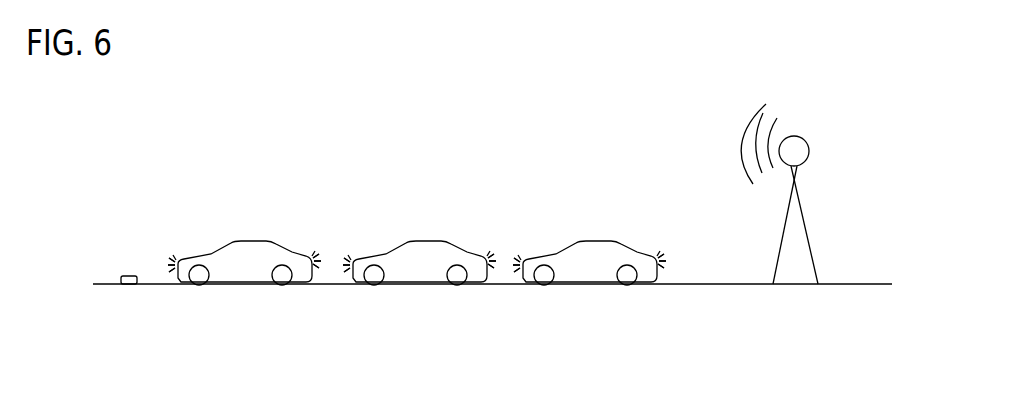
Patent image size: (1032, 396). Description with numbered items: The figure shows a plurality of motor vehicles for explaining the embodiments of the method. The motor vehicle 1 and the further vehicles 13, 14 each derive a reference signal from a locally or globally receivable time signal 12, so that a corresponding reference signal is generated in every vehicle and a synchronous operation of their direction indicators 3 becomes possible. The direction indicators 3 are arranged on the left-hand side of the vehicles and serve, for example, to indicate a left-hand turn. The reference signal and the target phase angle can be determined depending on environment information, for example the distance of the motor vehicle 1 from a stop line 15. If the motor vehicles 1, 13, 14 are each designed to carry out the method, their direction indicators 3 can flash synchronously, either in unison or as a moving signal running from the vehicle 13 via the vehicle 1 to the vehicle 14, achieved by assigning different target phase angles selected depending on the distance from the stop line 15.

The motor vehicle 1 is at (404, 252).
The direction indicators 3 is at (175, 260).
The time signal 12 is at (779, 123).
The vehicle 13 is at (247, 250).
The vehicle 14 is at (593, 256).
The stop line 15 is at (132, 286).